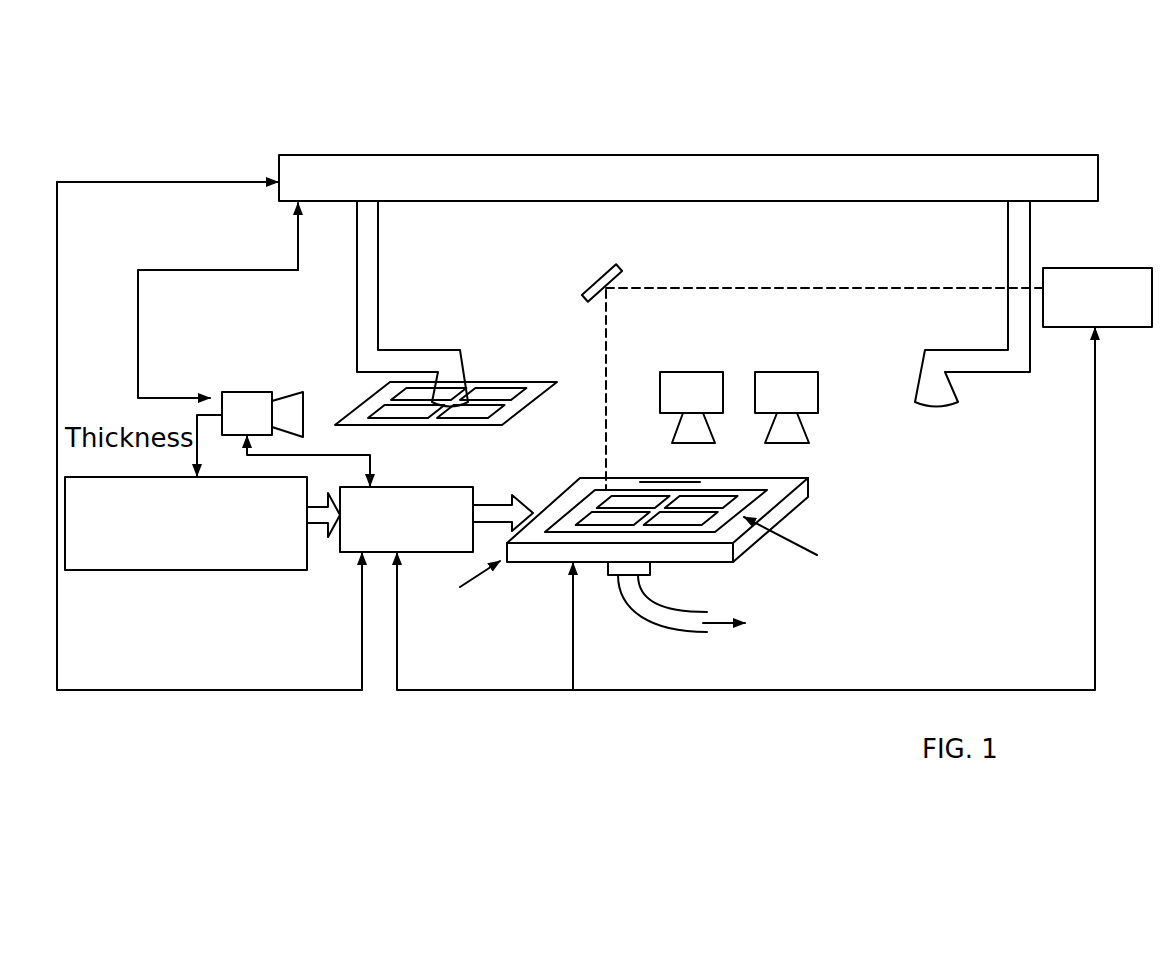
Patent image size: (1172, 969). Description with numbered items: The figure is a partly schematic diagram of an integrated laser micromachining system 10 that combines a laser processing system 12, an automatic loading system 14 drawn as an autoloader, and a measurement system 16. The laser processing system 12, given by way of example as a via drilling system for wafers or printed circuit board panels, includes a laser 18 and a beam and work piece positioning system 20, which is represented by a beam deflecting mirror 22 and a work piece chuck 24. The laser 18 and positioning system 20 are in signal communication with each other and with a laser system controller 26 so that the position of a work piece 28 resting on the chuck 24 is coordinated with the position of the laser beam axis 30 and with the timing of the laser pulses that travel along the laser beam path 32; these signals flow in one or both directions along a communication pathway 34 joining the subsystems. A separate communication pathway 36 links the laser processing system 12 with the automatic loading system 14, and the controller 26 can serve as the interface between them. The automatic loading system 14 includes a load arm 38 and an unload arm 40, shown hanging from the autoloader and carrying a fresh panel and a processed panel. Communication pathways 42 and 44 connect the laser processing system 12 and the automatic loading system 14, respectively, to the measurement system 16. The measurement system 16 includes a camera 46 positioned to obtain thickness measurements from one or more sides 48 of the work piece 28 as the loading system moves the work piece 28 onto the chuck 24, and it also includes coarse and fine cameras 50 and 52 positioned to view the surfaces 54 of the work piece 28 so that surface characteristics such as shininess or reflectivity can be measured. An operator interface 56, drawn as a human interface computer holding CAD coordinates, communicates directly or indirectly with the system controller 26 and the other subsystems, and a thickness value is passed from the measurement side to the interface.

The integrated laser micromachining system 10 is at (910, 119).
The laser processing system 12 is at (1129, 335).
The automatic loading system 14 is at (691, 150).
The measurement system 16 is at (306, 302).
The laser 18 is at (1123, 268).
The beam and work piece positioning system 20 is at (596, 452).
The beam deflecting mirror 22 is at (598, 277).
The work piece chuck 24 is at (800, 497).
The laser system controller 26 is at (428, 487).
The work piece 28 is at (740, 482).
The laser beam axis 30 is at (603, 322).
The laser beam path 32 is at (972, 286).
The communication pathway 34 is at (785, 690).
The communication pathway 36 is at (183, 690).
The load arm 38 is at (380, 262).
The unload arm 40 is at (1031, 228).
The communication pathway 42 is at (345, 455).
The communication pathway 44 is at (138, 295).
The camera 46 is at (291, 395).
The side of work piece 48 is at (521, 410).
The coarse camera 50 is at (723, 398).
The fine camera 52 is at (818, 393).
The surface of work piece 54 is at (673, 484).
The operator interface 56 is at (178, 570).